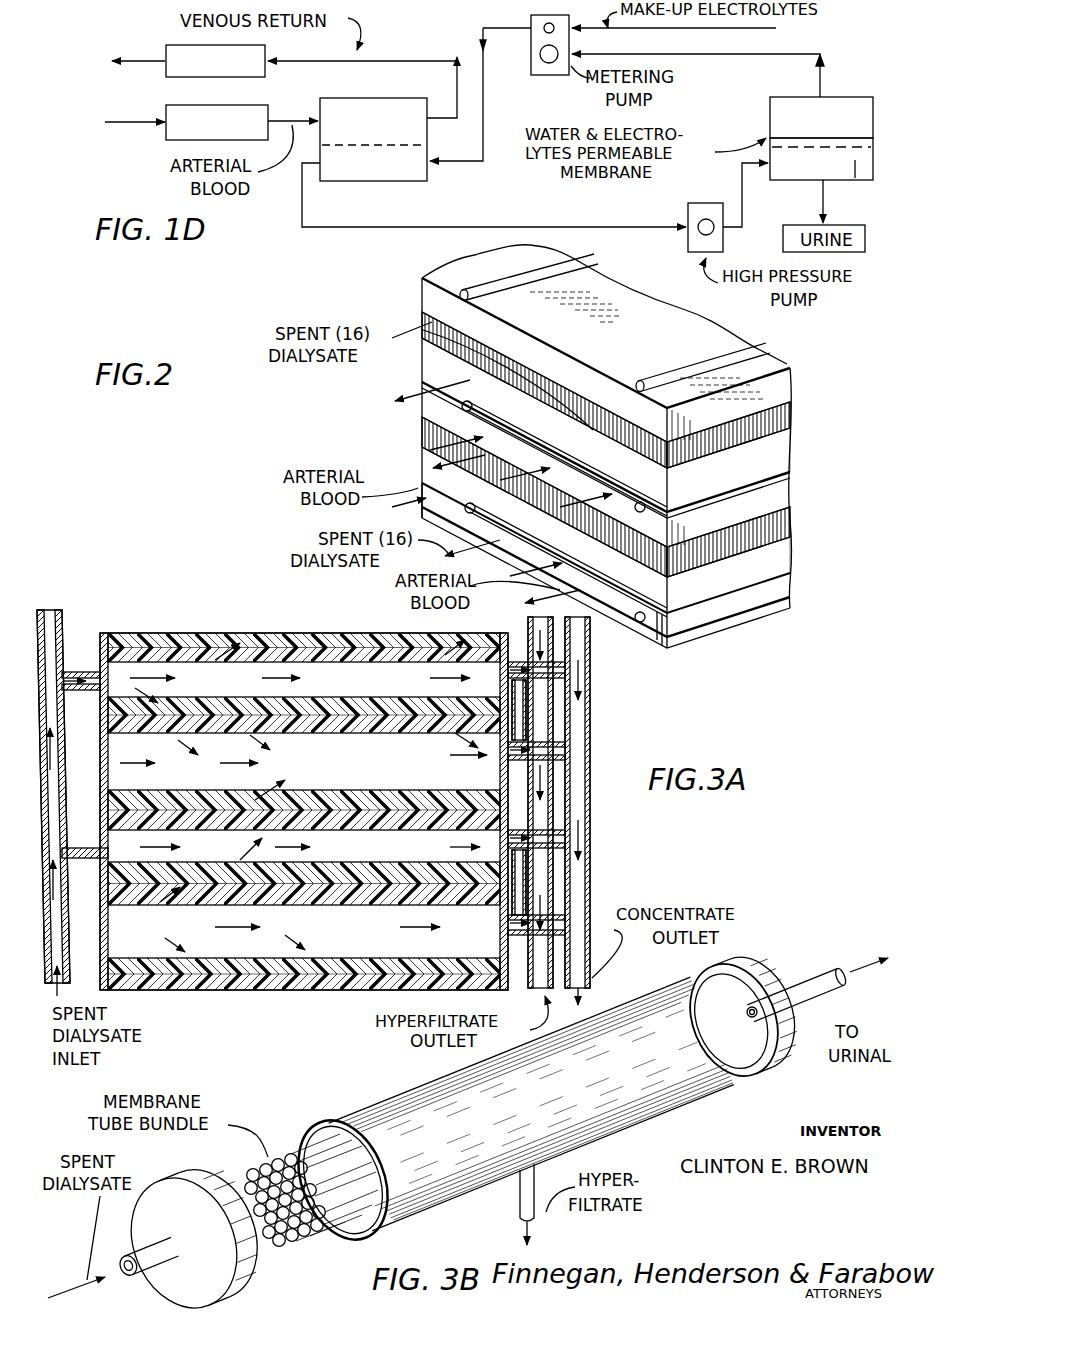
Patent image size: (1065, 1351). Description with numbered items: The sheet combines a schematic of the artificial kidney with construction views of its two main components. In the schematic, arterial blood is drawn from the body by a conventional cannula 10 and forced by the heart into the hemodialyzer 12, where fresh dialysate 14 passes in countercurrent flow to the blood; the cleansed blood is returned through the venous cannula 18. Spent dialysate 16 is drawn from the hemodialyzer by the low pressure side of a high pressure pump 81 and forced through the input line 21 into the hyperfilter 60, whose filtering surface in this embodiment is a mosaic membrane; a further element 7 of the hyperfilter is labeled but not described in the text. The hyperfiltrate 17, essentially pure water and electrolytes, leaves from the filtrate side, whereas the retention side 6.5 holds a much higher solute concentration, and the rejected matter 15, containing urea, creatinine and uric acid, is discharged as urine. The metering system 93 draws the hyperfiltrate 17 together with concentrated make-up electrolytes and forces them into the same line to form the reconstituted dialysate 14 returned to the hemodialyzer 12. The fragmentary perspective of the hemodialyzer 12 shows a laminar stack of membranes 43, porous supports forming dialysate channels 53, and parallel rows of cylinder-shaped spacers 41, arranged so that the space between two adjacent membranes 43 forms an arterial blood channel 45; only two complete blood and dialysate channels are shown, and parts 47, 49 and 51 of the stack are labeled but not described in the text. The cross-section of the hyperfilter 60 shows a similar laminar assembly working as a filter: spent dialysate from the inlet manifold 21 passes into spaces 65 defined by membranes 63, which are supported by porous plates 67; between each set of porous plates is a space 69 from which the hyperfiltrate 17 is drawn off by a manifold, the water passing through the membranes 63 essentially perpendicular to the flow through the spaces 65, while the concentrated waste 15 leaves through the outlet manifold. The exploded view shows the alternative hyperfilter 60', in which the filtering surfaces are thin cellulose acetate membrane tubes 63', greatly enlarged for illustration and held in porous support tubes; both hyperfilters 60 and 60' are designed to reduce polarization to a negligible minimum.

In FIG. 1D, the venous cannula 18 is at (265, 46).
In FIG. 1D, the cannula 10 is at (255, 100).
In FIG. 1D, the hemodialyzer 12 is at (411, 171).
In FIG. 2, the hemodialyzer 12 is at (645, 337).
In FIG. 1D, the fresh dialysate 14 is at (483, 128).
In FIG. 1D, the spent dialysate 16 is at (476, 227).
In FIG. 1D, the metering system 93 is at (531, 15).
In FIG. 1D, the hyperfiltrate 17 is at (780, 52).
In FIG. 3A, the hyperfiltrate 17 is at (528, 992).
In FIG. 3B, the hyperfiltrate 17 is at (520, 1241).
In FIG. 1D, the hyperfiltrate space 69 is at (882, 84).
In FIG. 3A, the hyperfiltrate space 69 is at (325, 771).
In FIG. 1D, the hyperfiltration membrane 7 is at (874, 148).
In FIG. 1D, the hyperfilter 60 is at (821, 159).
In FIG. 3A, the hyperfilter 60 is at (304, 790).
In FIG. 1D, the retention side 6.5 is at (857, 172).
In FIG. 1D, the high pressure pump 81 is at (688, 214).
In FIG. 1D, the input line 21 is at (742, 208).
In FIG. 3A, the input line 21 is at (52, 985).
In FIG. 3B, the input line 21 is at (74, 1290).
In FIG. 1D, the non-permeating solutes 15 is at (823, 210).
In FIG. 3A, the non-permeating solutes 15 is at (578, 897).
In FIG. 3B, the non-permeating solutes 15 is at (850, 1016).
In FIG. 2, the cylinder-shaped spacers 41 is at (597, 255).
In FIG. 2, the membranes 43 is at (426, 292).
In FIG. 2, the arterial blood channels 45 is at (422, 392).
In FIG. 2, the blood channel 47 is at (410, 497).
In FIG. 2, the base plate corner 49 is at (670, 660).
In FIG. 2, the base plate 51 is at (785, 610).
In FIG. 2, the dialysate channels 53 is at (790, 424).
In FIG. 3A, the membranes 63 is at (291, 808).
In FIG. 3A, the spaces 65 is at (250, 687).
In FIG. 3A, the porous plates 67 is at (122, 733).
In FIG. 3B, the alternative hyperfilter 60' is at (508, 1112).
In FIG. 3B, the membrane tubes 63' is at (311, 1209).